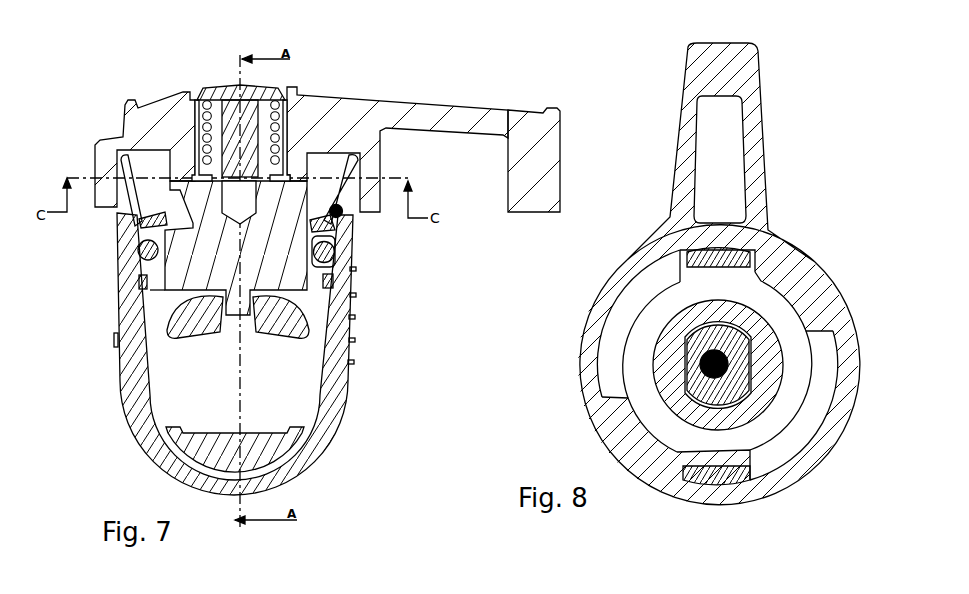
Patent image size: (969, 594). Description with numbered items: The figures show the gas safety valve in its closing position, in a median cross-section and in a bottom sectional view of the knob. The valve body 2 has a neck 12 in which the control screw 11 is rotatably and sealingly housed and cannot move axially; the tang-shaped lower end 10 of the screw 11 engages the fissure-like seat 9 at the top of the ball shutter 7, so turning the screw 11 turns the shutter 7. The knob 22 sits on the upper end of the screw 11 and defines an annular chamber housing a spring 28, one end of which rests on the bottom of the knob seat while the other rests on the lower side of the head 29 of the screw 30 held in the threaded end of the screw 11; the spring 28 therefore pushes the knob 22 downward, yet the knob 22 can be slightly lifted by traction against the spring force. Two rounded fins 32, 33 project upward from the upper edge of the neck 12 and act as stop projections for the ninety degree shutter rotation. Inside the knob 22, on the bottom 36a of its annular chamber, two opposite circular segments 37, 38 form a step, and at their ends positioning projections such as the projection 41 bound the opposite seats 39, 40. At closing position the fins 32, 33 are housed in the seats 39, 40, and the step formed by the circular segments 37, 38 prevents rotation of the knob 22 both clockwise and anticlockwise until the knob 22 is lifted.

In FIG. 7, the valve body 2 is at (108, 385).
In FIG. 7, the ball shutter 7 is at (273, 447).
In FIG. 7, the seat 9 is at (245, 323).
In FIG. 7, the lower end 10 is at (230, 327).
In FIG. 7, the control screw 11 is at (203, 267).
In FIG. 7, the neck 12 is at (340, 252).
In FIG. 7, the knob 22 is at (520, 123).
In FIG. 8, the knob 22 is at (752, 102).
In FIG. 7, the spring 28 is at (293, 140).
In FIG. 7, the head 29 is at (278, 100).
In FIG. 7, the screw 30 is at (237, 127).
In FIG. 7, the fin 32 is at (120, 167).
In FIG. 8, the fin 32 is at (700, 483).
In FIG. 7, the fin 33 is at (352, 167).
In FIG. 8, the fin 33 is at (755, 253).
In FIG. 8, the bottom 36a is at (640, 368).
In FIG. 8, the circular segment 37 is at (617, 332).
In FIG. 8, the circular segment 38 is at (817, 407).
In FIG. 8, the seat 39 is at (660, 288).
In FIG. 8, the seat 40 is at (720, 462).
In FIG. 8, the positioning projection 41 is at (757, 243).